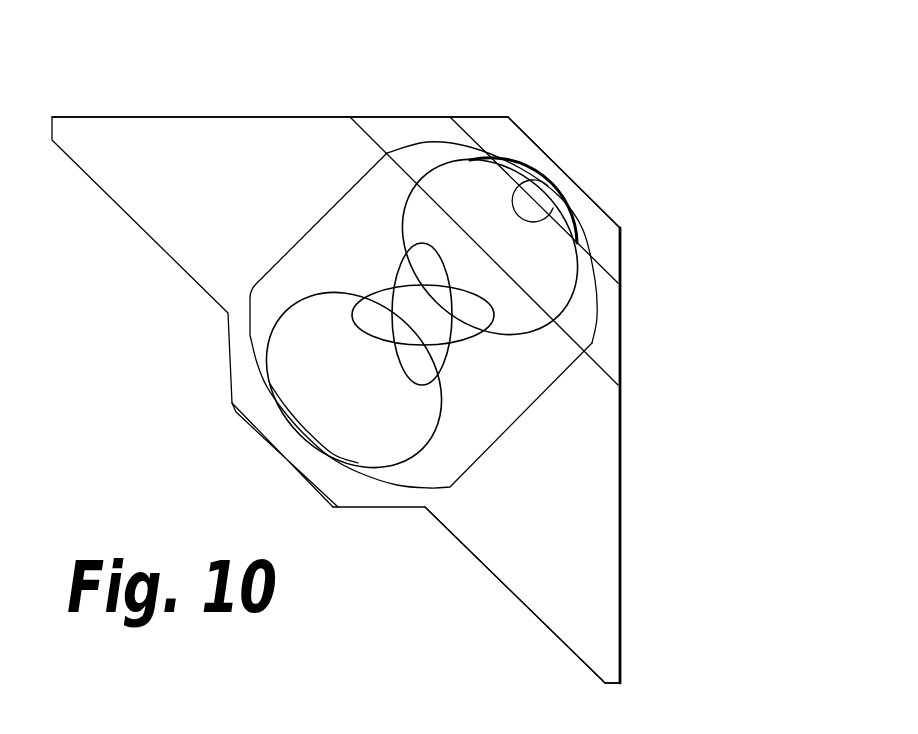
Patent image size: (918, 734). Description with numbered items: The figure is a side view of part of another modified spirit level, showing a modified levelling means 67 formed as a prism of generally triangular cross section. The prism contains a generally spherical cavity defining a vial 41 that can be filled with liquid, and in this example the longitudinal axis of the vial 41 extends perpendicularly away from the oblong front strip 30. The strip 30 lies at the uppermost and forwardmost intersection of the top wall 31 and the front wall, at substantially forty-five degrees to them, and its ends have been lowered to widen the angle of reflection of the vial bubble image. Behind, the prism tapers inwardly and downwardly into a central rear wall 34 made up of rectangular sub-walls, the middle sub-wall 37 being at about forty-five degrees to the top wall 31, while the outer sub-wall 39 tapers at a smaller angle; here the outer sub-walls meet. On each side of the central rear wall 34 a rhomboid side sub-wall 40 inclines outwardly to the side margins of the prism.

The oblong strip 30 is at (277, 456).
The top wall 31 is at (581, 571).
The central rear wall 34 is at (574, 107).
The middle sub-wall 37 is at (585, 190).
The outer sub-wall 39 is at (597, 240).
The side sub-wall 40 is at (338, 117).
The vial 41 is at (318, 222).
The modified levelling means 67 is at (673, 237).